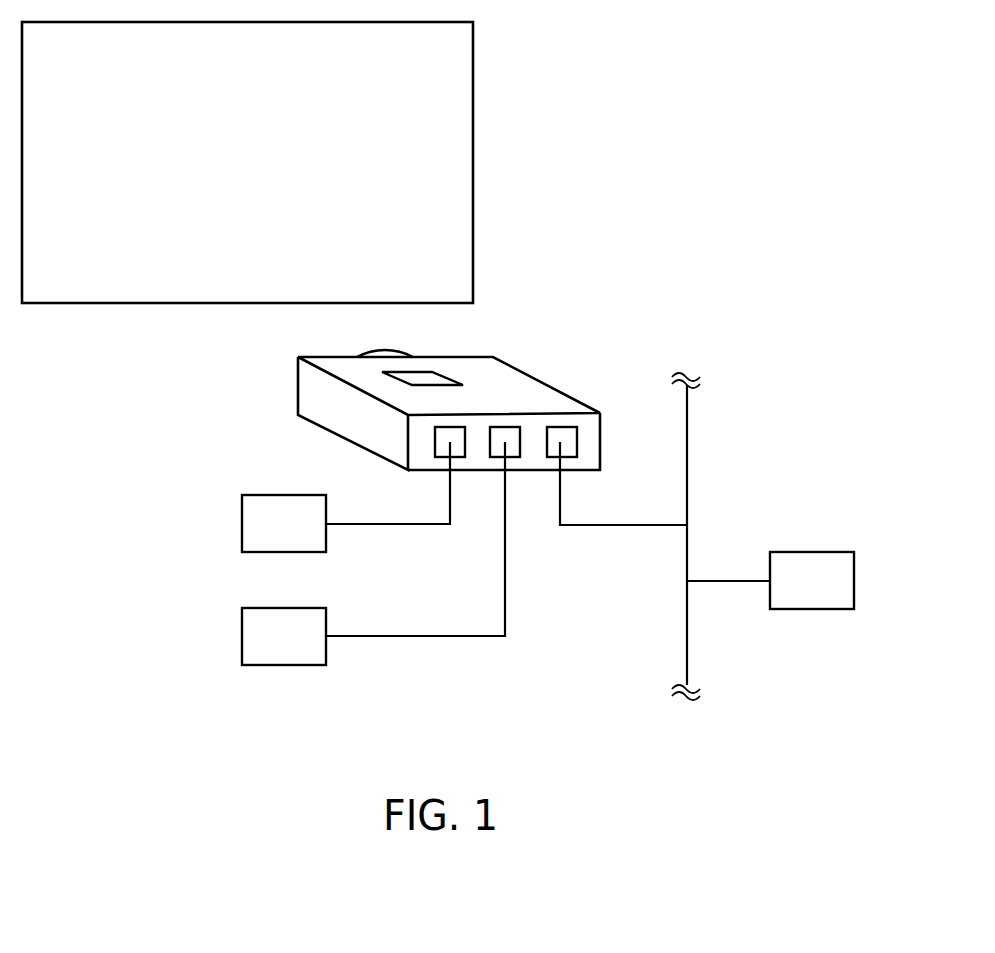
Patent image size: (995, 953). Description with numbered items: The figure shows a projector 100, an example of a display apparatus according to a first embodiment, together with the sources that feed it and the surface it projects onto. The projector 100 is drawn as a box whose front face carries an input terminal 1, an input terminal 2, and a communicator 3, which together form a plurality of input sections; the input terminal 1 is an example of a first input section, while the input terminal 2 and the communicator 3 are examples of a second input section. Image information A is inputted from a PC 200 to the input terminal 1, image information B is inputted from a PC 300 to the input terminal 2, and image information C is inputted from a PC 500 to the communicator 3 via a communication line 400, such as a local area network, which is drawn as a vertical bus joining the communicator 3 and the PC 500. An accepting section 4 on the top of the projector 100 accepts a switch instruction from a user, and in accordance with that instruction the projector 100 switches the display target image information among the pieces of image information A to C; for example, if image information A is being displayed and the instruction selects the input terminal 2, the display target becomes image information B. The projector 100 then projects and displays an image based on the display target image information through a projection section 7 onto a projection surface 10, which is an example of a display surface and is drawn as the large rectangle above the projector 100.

The projection surface 10 is at (458, 57).
The projector 100 is at (513, 378).
The accepting section 4 is at (427, 380).
The projection section 7 is at (392, 352).
The input terminal 1 is at (447, 442).
The input terminal 2 is at (502, 447).
The communicator 3 is at (570, 440).
The communication line 400 is at (688, 450).
The PC 200 is at (267, 493).
The PC 300 is at (267, 606).
The PC 500 is at (812, 550).